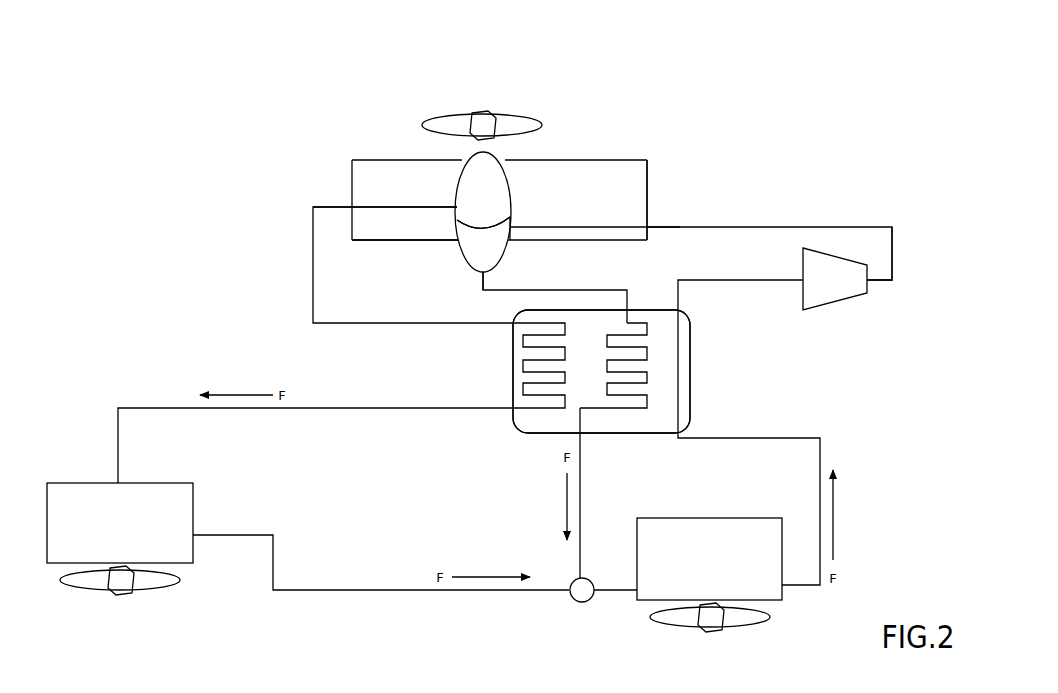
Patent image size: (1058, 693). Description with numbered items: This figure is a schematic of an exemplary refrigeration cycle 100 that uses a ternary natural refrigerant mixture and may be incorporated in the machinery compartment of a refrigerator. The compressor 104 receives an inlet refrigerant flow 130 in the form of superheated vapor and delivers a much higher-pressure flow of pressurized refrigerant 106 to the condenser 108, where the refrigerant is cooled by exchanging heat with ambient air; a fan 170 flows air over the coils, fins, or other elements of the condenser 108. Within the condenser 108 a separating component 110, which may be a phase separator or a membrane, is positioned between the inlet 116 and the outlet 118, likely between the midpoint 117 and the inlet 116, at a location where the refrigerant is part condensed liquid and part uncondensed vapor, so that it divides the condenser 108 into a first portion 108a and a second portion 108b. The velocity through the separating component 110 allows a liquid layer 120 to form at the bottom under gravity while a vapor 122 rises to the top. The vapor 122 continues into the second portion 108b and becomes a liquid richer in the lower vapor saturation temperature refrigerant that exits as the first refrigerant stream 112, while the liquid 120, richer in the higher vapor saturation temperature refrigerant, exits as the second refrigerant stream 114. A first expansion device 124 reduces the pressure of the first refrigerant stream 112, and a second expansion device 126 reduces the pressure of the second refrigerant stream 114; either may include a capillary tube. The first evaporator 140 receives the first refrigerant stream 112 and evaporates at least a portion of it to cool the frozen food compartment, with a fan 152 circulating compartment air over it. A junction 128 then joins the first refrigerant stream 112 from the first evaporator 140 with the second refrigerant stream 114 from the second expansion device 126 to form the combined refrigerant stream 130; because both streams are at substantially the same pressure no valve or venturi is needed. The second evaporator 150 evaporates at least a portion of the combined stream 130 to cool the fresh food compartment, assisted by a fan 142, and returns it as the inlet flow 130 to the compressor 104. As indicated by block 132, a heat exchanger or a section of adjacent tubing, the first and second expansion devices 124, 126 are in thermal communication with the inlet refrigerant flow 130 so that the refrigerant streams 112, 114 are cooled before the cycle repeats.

The refrigeration cycle 100 is at (757, 135).
The compressor 104 is at (828, 309).
The flow of pressurized refrigerant 106 is at (879, 253).
The condenser 108 is at (597, 153).
The first portion of condenser 108a is at (648, 165).
The second portion of condenser 108b is at (362, 241).
The separating component 110 is at (495, 158).
The first refrigerant stream 112 is at (365, 323).
The second refrigerant stream 114 is at (600, 290).
The inlet of condenser 116 is at (830, 227).
The midpoint of refrigerant flow through condenser 117 is at (510, 250).
The outlet of condenser 118 is at (352, 207).
The liquid layer 120 is at (480, 266).
The vapor 122 is at (465, 187).
The first expansion device 124 is at (565, 376).
The second expansion device 126 is at (650, 373).
The junction 128 is at (586, 580).
The combined refrigerant stream 130 is at (758, 281).
The block 132 is at (690, 374).
The first evaporator 140 is at (165, 491).
The fan 142 is at (745, 621).
The second evaporator 150 is at (715, 520).
The fan 152 is at (150, 586).
The fan 170 is at (520, 120).